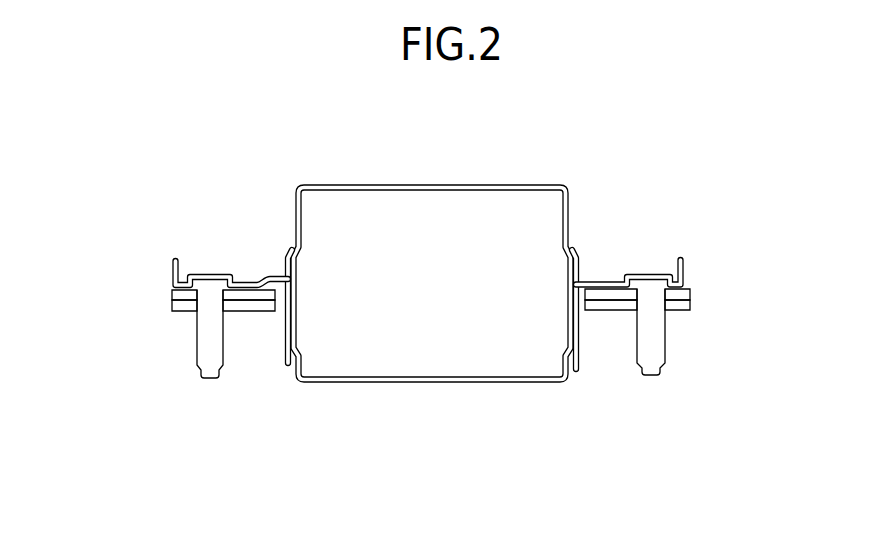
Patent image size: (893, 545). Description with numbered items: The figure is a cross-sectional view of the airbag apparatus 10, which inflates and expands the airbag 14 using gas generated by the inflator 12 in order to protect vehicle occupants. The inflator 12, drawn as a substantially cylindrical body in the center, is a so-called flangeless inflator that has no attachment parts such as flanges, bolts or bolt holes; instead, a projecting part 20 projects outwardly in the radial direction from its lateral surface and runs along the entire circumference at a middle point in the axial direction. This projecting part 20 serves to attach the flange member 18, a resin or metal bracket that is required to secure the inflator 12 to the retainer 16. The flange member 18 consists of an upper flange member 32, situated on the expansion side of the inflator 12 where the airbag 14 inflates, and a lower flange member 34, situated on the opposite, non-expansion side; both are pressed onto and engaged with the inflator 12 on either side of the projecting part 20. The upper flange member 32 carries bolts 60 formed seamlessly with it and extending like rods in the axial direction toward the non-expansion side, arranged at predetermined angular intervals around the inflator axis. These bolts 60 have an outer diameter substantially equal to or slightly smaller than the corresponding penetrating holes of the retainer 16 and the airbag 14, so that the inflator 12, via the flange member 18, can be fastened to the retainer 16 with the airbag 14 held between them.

The airbag apparatus 10 is at (666, 188).
The inflator 12 is at (508, 183).
The airbag 14 is at (690, 293).
The retainer 16 is at (690, 302).
The flange member 18 is at (436, 352).
The projecting part 20 is at (560, 310).
The upper flange member 32 is at (580, 265).
The lower flange member 34 is at (580, 335).
The bolt 60 is at (665, 343).